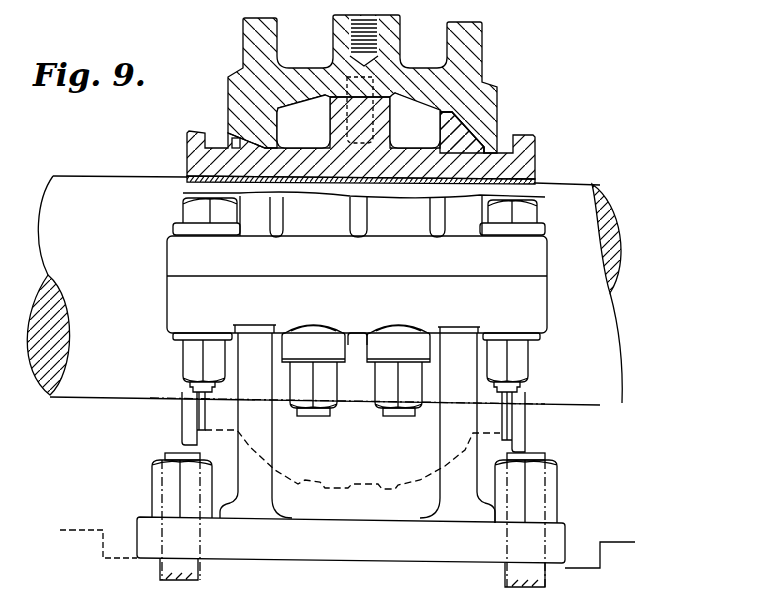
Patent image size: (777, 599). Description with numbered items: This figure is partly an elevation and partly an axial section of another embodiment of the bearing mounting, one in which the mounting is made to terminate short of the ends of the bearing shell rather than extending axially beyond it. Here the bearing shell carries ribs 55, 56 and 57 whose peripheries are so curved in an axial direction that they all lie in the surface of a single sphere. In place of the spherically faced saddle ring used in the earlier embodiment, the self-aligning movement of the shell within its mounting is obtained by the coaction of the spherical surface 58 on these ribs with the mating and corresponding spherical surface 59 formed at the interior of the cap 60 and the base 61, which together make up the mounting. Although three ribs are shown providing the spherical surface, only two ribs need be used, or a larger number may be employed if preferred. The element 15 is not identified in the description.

The tubular member 15 is at (603, 391).
The rib 55 is at (455, 147).
The rib 56 is at (373, 117).
The rib 57 is at (262, 129).
The spherical surface 58 is at (447, 128).
The spherical surface 59 is at (453, 132).
The cap 60 is at (465, 55).
The base 61 is at (312, 505).